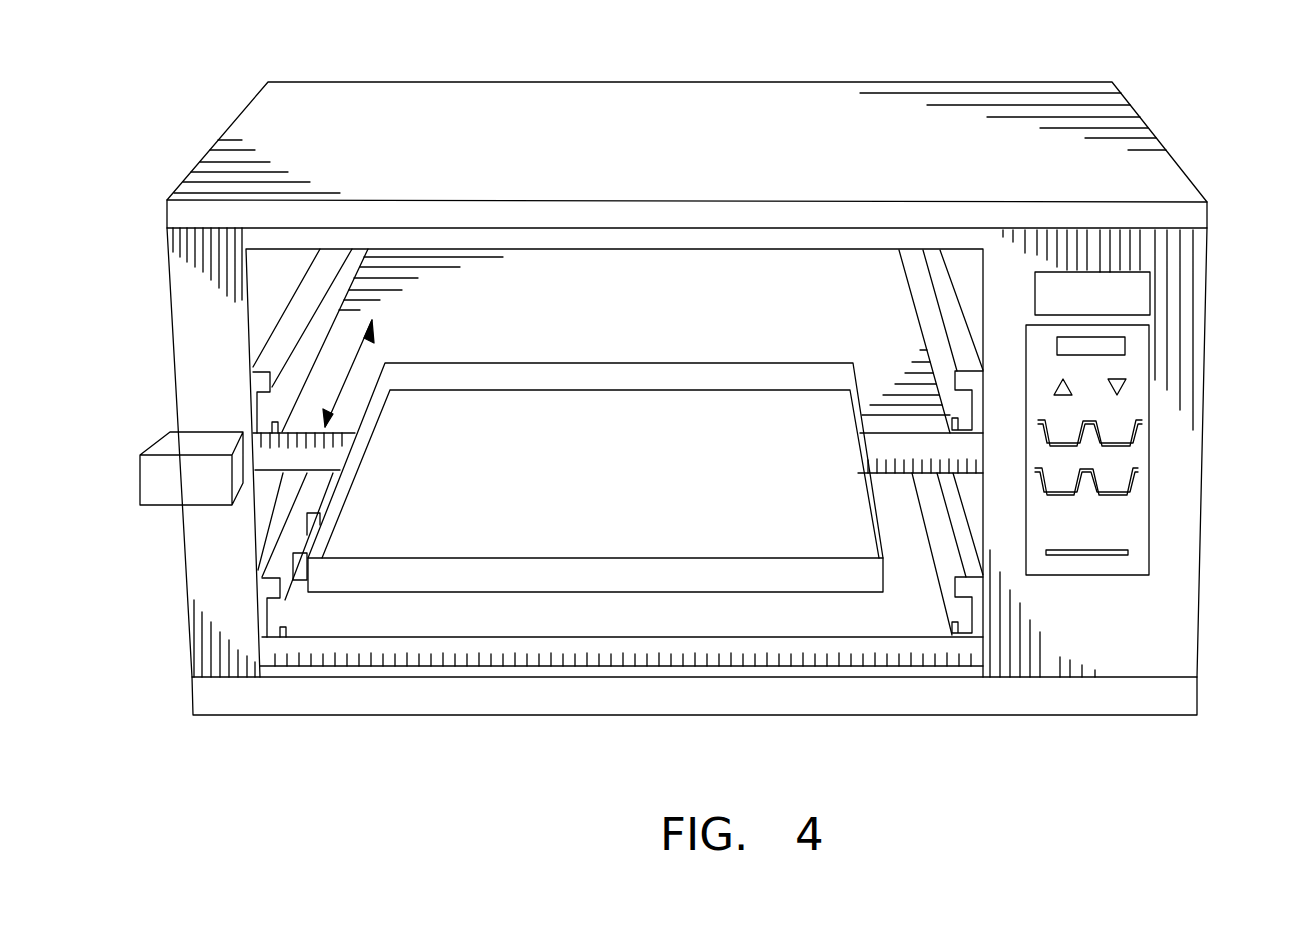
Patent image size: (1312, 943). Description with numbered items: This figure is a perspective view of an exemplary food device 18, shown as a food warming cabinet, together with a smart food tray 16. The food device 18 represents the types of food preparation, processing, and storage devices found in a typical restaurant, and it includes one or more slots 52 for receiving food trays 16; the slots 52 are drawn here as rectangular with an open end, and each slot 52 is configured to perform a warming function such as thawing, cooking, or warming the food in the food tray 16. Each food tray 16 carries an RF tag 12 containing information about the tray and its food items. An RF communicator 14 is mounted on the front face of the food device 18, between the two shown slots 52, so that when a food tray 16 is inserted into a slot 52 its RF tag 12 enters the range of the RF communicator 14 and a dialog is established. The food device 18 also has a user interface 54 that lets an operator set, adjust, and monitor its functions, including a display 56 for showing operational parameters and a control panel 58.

The RF tag 12 is at (305, 538).
The RF communicator 14 is at (170, 487).
The food tray 16 is at (455, 553).
The food device 18 is at (650, 103).
The slot 52 is at (865, 442).
The user interface 54 is at (1151, 460).
The display 56 is at (1110, 295).
The control panel 58 is at (1140, 500).